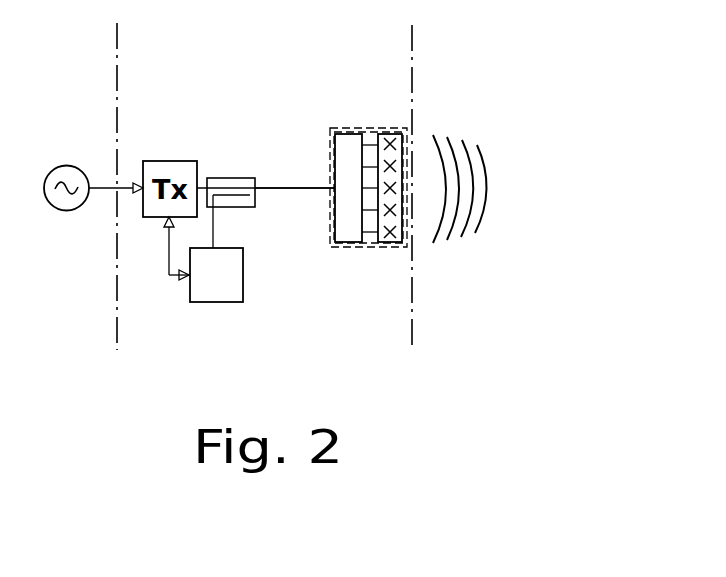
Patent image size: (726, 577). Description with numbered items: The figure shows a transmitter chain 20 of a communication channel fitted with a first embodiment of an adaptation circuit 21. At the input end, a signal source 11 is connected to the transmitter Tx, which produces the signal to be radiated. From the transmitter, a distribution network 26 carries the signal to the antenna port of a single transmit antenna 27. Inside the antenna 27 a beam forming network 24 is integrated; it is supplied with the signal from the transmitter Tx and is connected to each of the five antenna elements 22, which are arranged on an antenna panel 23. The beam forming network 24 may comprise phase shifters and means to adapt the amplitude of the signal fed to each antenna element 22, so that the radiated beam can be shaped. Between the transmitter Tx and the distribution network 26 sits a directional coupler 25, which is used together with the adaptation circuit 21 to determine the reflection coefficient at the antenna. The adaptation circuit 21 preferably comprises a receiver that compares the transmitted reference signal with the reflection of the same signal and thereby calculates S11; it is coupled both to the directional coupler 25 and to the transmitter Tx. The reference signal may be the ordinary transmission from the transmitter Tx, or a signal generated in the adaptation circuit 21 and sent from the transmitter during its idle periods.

The signal source 11 is at (67, 211).
The transmitter chain 20 is at (250, 54).
The adaptation circuit 21 is at (207, 248).
The antenna elements 22 is at (397, 211).
The antenna panel 23 is at (390, 243).
The beam forming network 24 is at (345, 232).
The directional coupler 25 is at (235, 178).
The distribution network 26 is at (295, 187).
The transmit antenna 27 is at (372, 128).